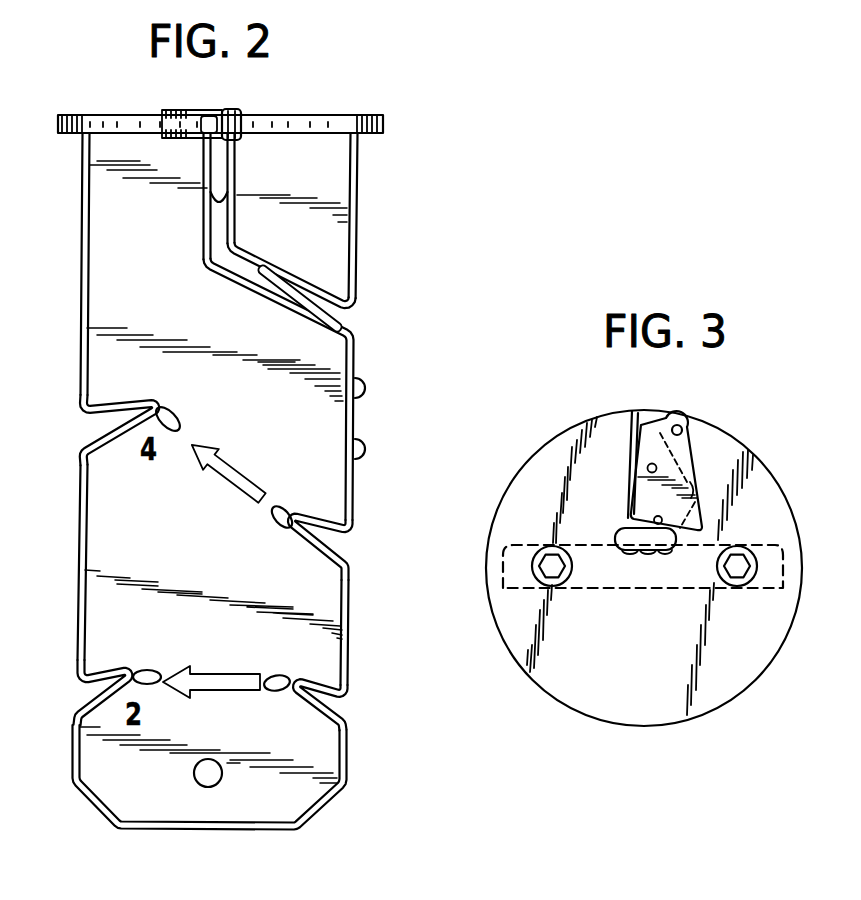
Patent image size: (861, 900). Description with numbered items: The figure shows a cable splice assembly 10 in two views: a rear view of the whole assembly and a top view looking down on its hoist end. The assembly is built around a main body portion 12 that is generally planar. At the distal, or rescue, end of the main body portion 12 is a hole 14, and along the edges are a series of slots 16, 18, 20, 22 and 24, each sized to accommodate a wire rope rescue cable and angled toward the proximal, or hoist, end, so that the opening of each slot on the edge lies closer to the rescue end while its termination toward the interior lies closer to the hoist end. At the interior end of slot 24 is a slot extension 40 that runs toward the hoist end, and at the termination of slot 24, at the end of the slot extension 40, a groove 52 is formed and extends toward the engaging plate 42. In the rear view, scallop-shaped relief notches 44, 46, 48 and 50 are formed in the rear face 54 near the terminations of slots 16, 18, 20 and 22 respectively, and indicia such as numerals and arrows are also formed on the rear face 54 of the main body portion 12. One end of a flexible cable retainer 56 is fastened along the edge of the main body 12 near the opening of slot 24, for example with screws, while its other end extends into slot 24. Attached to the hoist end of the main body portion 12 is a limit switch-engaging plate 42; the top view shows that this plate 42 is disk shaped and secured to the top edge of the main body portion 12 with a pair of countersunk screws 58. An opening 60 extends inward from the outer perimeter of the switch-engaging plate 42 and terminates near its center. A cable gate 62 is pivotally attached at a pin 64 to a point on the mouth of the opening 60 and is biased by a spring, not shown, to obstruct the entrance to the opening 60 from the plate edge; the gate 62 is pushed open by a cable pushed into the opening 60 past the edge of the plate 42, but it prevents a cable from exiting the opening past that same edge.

In FIG. 2, the cable splice assembly 10 is at (418, 425).
In FIG. 2, the main body portion 12 is at (84, 300).
In FIG. 3, the main body portion 12 is at (521, 593).
In FIG. 2, the hole 14 is at (208, 787).
In FIG. 2, the slot 16 is at (86, 427).
In FIG. 2, the slot 18 is at (85, 688).
In FIG. 2, the slot 20 is at (340, 713).
In FIG. 2, the slot 22 is at (352, 553).
In FIG. 2, the slot 24 is at (357, 312).
In FIG. 2, the slot extension 40 is at (203, 222).
In FIG. 2, the limit switch-engaging plate 42 is at (101, 114).
In FIG. 3, the limit switch-engaging plate 42 is at (781, 482).
In FIG. 2, the scallop-shaped relief notch 44 is at (174, 419).
In FIG. 2, the scallop-shaped relief notch 46 is at (147, 668).
In FIG. 2, the scallop-shaped relief notch 48 is at (284, 673).
In FIG. 2, the scallop-shaped relief notch 50 is at (289, 506).
In FIG. 2, the groove 52 is at (235, 168).
In FIG. 2, the rear face 54 is at (342, 204).
In FIG. 2, the flexible cable retainer 56 is at (357, 343).
In FIG. 3, the countersunk screws 58 is at (566, 583).
In FIG. 3, the opening 60 is at (633, 411).
In FIG. 2, the cable gate 62 is at (224, 108).
In FIG. 3, the cable gate 62 is at (694, 456).
In FIG. 3, the pin 64 is at (680, 422).